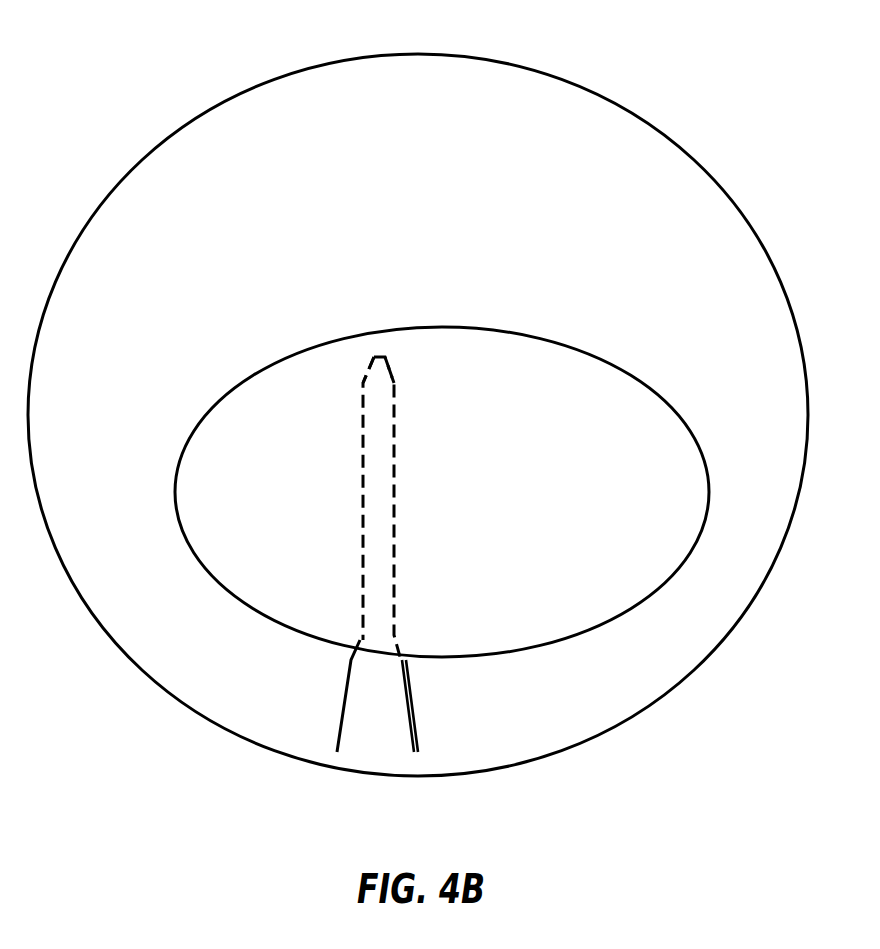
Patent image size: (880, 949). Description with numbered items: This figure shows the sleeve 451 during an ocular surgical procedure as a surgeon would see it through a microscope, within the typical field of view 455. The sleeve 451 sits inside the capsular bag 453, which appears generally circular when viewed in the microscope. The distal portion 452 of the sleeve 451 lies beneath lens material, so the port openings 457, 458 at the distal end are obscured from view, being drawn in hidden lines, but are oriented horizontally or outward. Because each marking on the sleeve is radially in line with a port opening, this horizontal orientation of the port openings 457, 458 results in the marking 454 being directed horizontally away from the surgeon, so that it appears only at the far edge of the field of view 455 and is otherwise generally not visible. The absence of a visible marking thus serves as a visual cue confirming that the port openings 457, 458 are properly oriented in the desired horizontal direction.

The field of view 455 is at (180, 130).
The capsular bag 453 is at (223, 398).
The distal portion 452 is at (400, 522).
The port opening 458 is at (358, 371).
The port opening 457 is at (400, 372).
The sleeve 451 is at (325, 712).
The marking 454 is at (419, 697).